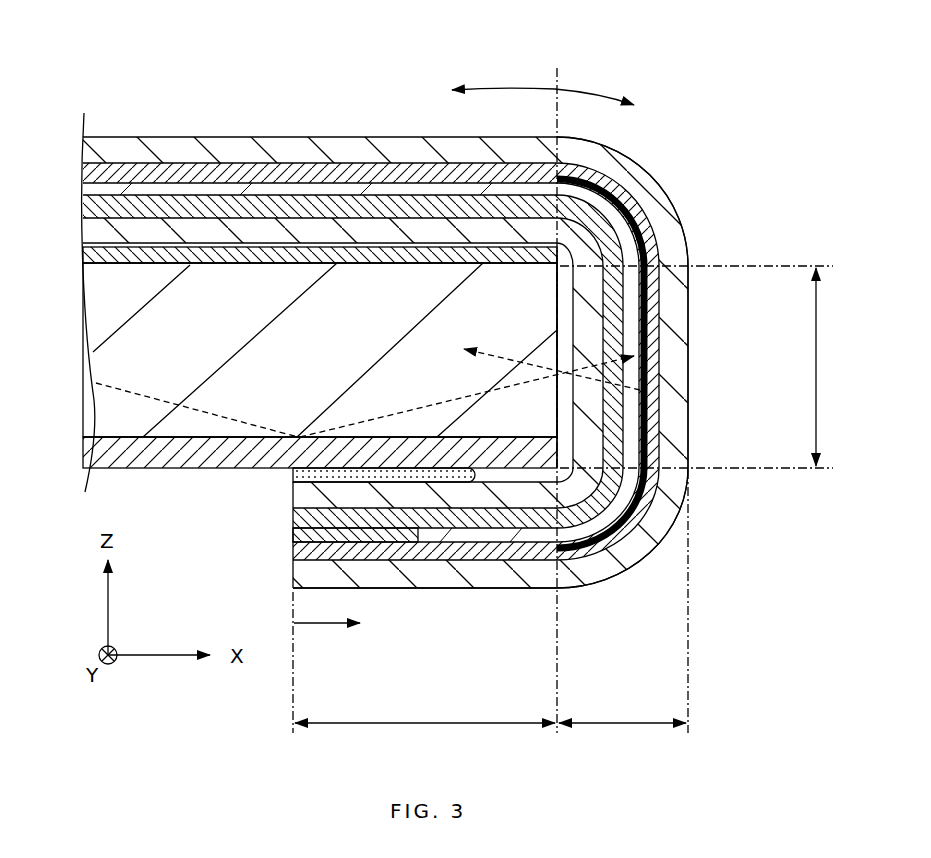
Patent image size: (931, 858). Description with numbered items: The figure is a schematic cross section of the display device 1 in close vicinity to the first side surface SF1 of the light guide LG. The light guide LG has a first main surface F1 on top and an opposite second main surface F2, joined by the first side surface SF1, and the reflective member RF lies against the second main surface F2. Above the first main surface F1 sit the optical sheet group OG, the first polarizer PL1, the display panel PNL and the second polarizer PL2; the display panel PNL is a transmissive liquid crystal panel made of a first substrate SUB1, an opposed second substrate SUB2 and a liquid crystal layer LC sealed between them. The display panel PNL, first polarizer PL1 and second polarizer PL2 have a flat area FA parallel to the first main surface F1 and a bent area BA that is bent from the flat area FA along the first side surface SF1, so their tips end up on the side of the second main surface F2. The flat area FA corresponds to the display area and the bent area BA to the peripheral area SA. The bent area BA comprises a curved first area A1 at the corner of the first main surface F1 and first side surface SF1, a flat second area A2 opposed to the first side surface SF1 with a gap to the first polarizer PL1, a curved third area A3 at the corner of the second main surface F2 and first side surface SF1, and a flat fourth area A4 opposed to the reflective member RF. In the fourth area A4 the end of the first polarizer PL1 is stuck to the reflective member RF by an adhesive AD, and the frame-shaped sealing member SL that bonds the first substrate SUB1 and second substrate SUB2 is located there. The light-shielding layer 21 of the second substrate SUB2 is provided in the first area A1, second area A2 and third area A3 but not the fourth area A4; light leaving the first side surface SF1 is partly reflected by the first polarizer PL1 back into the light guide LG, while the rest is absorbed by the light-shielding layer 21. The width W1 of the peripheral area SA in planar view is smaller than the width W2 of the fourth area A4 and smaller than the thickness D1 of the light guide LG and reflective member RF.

The display device 1 is at (128, 62).
The light-shielding layer 21 is at (658, 318).
The first polarizer PL1 is at (128, 227).
The second polarizer PL2 is at (182, 152).
The first substrate SUB1 is at (270, 216).
The second substrate SUB2 is at (238, 177).
The liquid crystal layer LC is at (247, 193).
The display panel PNL is at (343, 34).
The optical sheet group OG is at (238, 264).
The light guide LG is at (190, 425).
The reflective member RF is at (142, 458).
The adhesive AD is at (292, 476).
The sealing member SL is at (300, 537).
The first main surface F1 is at (356, 276).
The second main surface F2 is at (405, 428).
The first side surface SF1 is at (548, 318).
The first area A1 is at (684, 177).
The second area A2 is at (708, 367).
The third area A3 is at (674, 567).
The fourth area A4 is at (447, 616).
The thickness of the light guide and the reflective member D1 is at (832, 367).
The width of the peripheral area W1 is at (622, 737).
The width of the fourth area W2 is at (425, 737).
The flat area FA is at (503, 77).
The bent area BA is at (595, 85).
The peripheral area SA is at (331, 639).